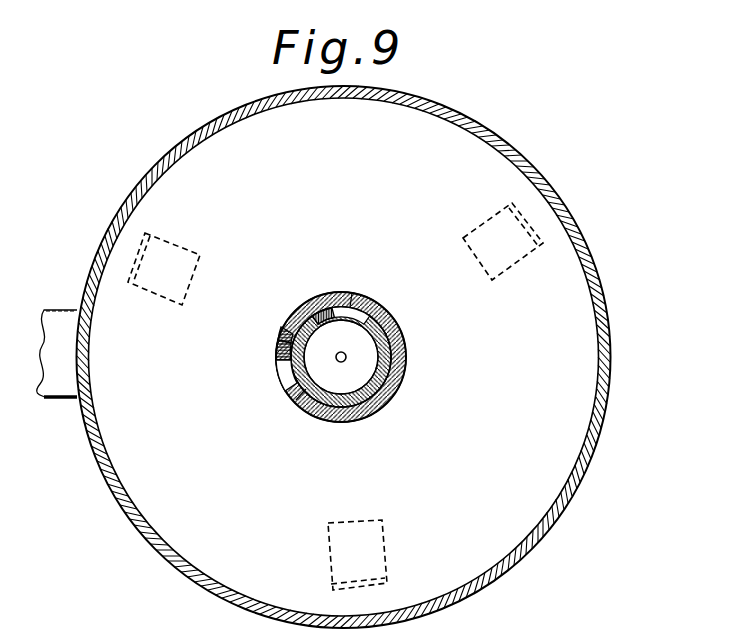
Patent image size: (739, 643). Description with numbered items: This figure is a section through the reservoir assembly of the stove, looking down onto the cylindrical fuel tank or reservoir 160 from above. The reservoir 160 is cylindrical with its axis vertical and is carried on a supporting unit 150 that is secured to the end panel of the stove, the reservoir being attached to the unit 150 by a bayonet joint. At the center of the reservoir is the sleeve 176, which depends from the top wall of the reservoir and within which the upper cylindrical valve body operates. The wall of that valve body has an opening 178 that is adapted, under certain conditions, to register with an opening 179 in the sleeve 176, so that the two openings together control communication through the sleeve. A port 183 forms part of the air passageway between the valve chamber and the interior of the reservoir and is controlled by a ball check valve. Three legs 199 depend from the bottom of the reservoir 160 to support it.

The unit 150 is at (63, 400).
The fuel tank or reservoir 160 is at (601, 299).
The sleeve 176 is at (406, 351).
The opening 178 is at (351, 312).
The opening 179 is at (286, 372).
The port 183 is at (346, 361).
The legs 199 is at (193, 256).